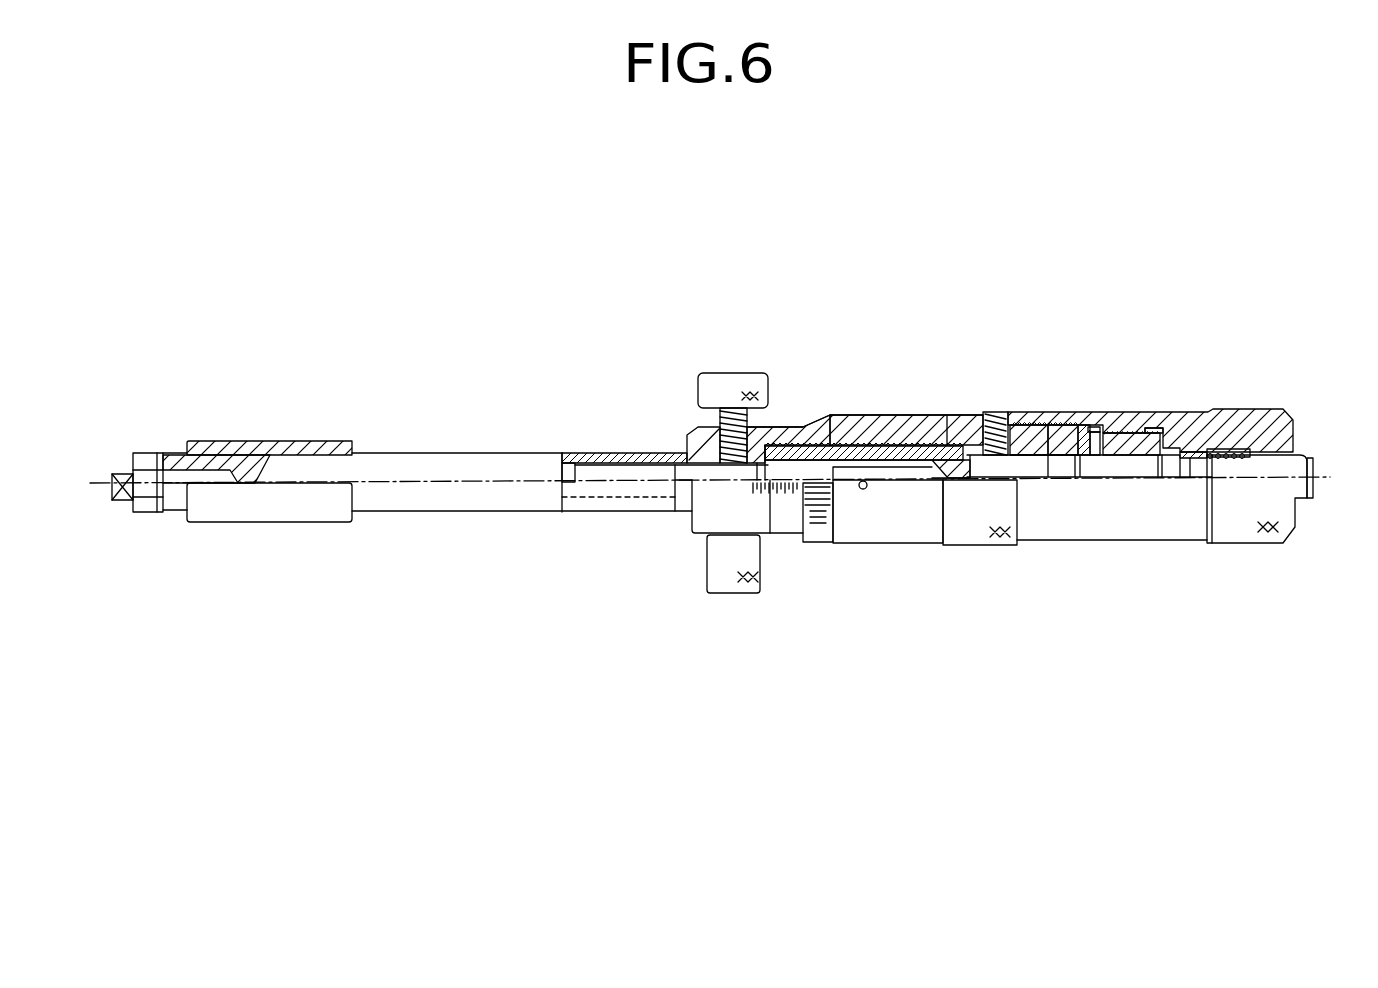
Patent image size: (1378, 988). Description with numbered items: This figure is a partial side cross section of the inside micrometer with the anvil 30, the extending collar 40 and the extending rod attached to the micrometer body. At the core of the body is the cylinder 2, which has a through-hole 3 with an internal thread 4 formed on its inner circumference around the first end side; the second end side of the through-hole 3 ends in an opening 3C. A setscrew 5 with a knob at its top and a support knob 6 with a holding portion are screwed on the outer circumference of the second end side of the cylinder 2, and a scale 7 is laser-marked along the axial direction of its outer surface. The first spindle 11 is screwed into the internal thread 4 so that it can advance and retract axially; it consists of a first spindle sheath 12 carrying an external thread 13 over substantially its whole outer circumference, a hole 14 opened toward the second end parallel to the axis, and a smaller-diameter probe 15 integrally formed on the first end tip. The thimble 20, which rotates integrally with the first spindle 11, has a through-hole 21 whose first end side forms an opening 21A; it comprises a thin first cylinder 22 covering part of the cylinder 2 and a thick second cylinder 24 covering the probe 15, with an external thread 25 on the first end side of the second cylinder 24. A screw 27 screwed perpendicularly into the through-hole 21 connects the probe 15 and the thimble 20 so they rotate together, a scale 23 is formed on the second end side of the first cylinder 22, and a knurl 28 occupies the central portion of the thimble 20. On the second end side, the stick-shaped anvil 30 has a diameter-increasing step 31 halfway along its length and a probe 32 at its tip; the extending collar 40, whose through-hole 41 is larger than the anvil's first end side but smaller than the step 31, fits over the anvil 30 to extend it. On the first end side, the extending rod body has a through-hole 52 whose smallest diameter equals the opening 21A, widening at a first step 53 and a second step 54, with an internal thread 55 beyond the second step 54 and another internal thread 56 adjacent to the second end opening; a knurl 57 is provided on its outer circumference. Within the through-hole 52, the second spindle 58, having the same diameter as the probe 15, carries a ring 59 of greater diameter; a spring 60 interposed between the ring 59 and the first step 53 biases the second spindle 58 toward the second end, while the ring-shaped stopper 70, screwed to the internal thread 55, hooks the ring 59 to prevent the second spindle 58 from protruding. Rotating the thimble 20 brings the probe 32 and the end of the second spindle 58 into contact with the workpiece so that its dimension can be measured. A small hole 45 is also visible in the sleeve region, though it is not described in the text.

The cylinder 2 is at (781, 426).
The through-hole 3 is at (767, 426).
The opening 3C is at (680, 450).
The internal thread 4 is at (903, 413).
The setscrew 5 is at (737, 376).
The support knob 6 is at (722, 577).
The scale 7 is at (768, 533).
The first spindle 11 is at (965, 602).
The first spindle sheath 12 is at (930, 500).
The external thread 13 is at (892, 485).
The hole 14 is at (853, 482).
The probe 15 is at (966, 480).
The thimble 20 is at (1032, 330).
The through-hole 21 is at (952, 412).
The opening 21A is at (1052, 478).
The first cylinder 22 is at (968, 412).
The scale 23 is at (813, 527).
The second cylinder 24 is at (1012, 412).
The external thread 25 is at (1070, 412).
The screw 27 is at (979, 478).
The knurl 28 is at (1007, 540).
The anvil 30 is at (466, 505).
The step 31 is at (558, 457).
The probe 32 is at (111, 478).
The extending collar 40 is at (587, 452).
The through-hole 41 is at (613, 452).
The hole 45 is at (866, 510).
The through-hole 52 is at (1102, 428).
The first step 53 is at (1285, 432).
The second step 54 is at (1155, 432).
The internal thread 55 is at (1128, 430).
The internal thread 56 is at (1100, 412).
The knurl 57 is at (1268, 547).
The second spindle 58 is at (1253, 467).
The ring 59 is at (1200, 460).
The spring 60 is at (1223, 450).
The stopper 70 is at (1160, 456).